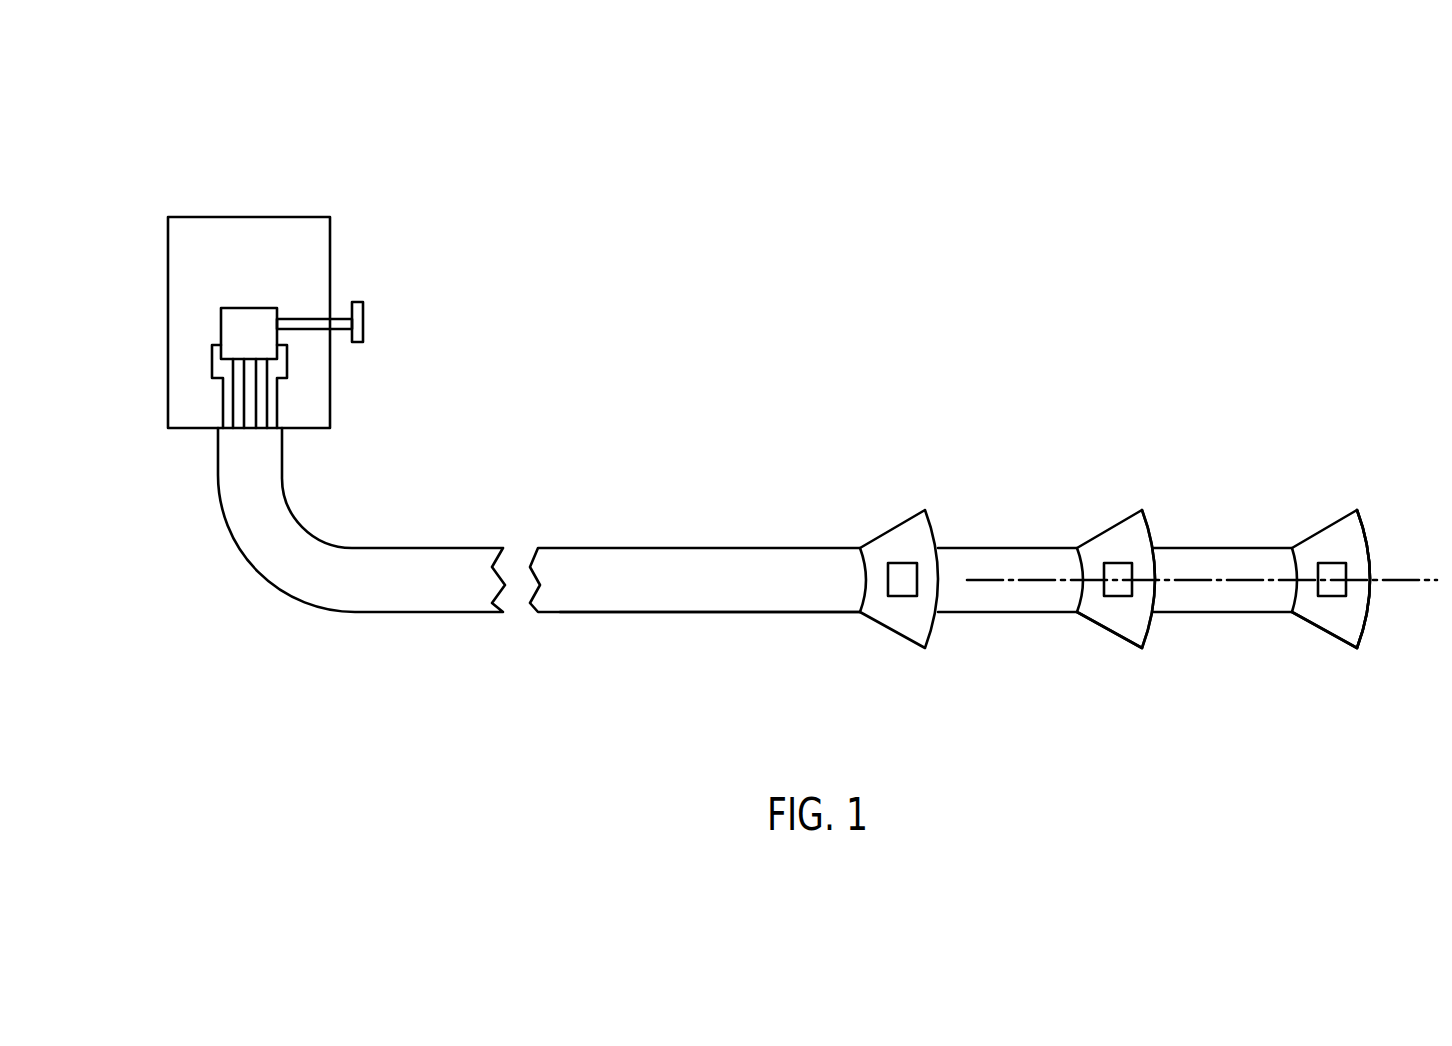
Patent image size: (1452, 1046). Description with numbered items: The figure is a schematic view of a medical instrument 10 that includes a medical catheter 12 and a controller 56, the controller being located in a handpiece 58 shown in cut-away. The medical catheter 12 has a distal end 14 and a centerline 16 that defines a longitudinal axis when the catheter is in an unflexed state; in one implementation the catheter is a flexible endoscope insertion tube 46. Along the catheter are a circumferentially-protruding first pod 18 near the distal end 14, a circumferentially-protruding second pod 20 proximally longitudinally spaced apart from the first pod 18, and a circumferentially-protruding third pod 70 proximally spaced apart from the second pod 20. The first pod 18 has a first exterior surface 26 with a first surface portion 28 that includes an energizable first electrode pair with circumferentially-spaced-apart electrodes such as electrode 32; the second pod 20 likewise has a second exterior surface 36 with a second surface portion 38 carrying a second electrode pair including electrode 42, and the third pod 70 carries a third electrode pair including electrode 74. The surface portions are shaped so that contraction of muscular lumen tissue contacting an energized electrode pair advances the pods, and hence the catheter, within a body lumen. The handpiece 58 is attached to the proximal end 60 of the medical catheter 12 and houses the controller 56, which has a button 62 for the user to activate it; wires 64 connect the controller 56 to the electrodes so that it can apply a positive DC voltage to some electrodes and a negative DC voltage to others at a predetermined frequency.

The medical instrument 10 is at (780, 244).
The medical catheter 12 is at (675, 522).
The distal end 14 is at (1370, 552).
The centerline 16 is at (1247, 577).
The first pod 18 is at (1364, 500).
The second pod 20 is at (1149, 500).
The first exterior surface 26 is at (1356, 624).
The first surface portion 28 is at (1318, 627).
The electrode 32 is at (1333, 562).
The second exterior surface 36 is at (1140, 623).
The second surface portion 38 is at (1108, 627).
The electrode 42 is at (1117, 562).
The flexible endoscope insertion tube 46 is at (680, 612).
The controller 56 is at (241, 297).
The handpiece 58 is at (232, 203).
The proximal end 60 is at (218, 447).
The button 62 is at (363, 321).
The wires 64 is at (210, 353).
The third pod 70 is at (932, 501).
The electrode 74 is at (902, 562).